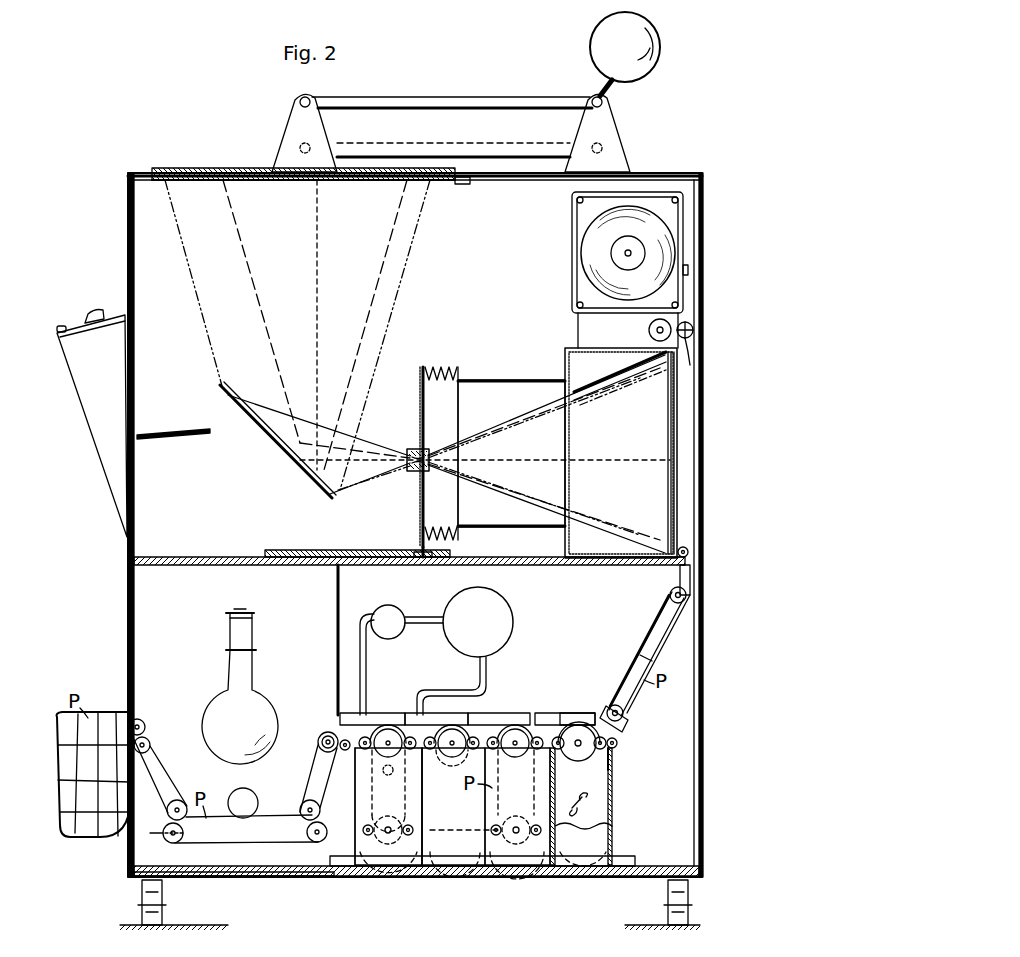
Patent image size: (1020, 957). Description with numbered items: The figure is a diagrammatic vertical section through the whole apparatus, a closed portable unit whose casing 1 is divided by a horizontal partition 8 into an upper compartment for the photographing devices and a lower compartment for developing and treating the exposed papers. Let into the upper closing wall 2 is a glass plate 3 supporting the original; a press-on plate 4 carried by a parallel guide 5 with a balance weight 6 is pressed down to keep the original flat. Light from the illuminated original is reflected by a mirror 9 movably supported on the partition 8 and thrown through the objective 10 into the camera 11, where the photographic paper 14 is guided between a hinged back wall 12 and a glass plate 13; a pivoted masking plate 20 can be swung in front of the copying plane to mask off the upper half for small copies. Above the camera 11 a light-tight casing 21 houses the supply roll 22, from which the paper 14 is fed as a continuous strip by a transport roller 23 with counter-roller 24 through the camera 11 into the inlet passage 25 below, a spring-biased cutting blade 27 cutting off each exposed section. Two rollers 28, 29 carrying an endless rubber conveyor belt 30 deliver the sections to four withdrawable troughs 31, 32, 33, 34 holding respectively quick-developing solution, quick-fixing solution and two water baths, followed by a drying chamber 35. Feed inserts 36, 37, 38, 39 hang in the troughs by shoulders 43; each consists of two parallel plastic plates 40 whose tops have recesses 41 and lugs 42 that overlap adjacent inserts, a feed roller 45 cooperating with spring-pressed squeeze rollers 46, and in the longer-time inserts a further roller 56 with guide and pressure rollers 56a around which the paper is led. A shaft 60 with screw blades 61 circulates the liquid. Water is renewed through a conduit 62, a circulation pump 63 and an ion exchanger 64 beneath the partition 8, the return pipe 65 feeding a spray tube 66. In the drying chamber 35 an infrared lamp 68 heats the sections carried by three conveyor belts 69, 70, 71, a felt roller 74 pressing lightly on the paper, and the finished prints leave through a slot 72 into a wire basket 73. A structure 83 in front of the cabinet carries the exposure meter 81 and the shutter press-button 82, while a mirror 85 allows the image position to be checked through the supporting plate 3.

The casing 1 is at (128, 215).
The upper horizontal closing wall 2 is at (645, 175).
The glass plate 3 is at (192, 170).
The press-on plate 4 is at (224, 172).
The parallel guide 5 is at (426, 152).
The balance weight 6 is at (590, 54).
The horizontal partition 8 is at (203, 560).
The mirror 9 is at (254, 425).
The objective 10 is at (416, 447).
The camera 11 is at (563, 360).
The hinged back wall 12 is at (668, 432).
The glass plate 13 is at (671, 472).
The photographic paper 14 is at (674, 496).
The masking plate 20 is at (650, 402).
The light-tight closable casing 21 is at (572, 232).
The supply roll 22 is at (590, 268).
The transport roller 23 is at (649, 331).
The counter-roller 24 is at (655, 366).
The inlet passage 25 is at (646, 638).
The cutting blade 27 is at (668, 552).
The roller 28 is at (668, 594).
The roller 29 is at (625, 716).
The endless conveyor belt 30 is at (640, 692).
The trough 31 is at (577, 865).
The trough 32 is at (550, 868).
The trough 33 is at (468, 868).
The trough 34 is at (414, 796).
The drying chamber 35 is at (252, 868).
The feed insert 36 is at (612, 825).
The feed insert 37 is at (506, 868).
The feed insert 38 is at (424, 868).
The feed insert 39 is at (372, 870).
The plastic plates 40 is at (574, 722).
The recesses 41 is at (525, 722).
The lugs 42 is at (336, 722).
The shoulders 43 is at (610, 752).
The feed roller 45 is at (474, 720).
The squeeze rollers 46 is at (432, 750).
The further roller 56 is at (514, 820).
The guide and pressure rollers 56a is at (465, 831).
The shaft 60 is at (608, 805).
The screw blades 61 is at (581, 797).
The conduit 62 is at (366, 660).
The circulation pump 63 is at (383, 607).
The ion exchanger 64 is at (454, 603).
The return pipe 65 is at (480, 675).
The spray tube 66 is at (388, 788).
The infrared lamp 68 is at (222, 692).
The conveyor belt 69 is at (315, 760).
The conveyor belt 70 is at (220, 838).
The conveyor belt 71 is at (148, 748).
The slot 72 is at (130, 720).
The wire basket 73 is at (80, 835).
The felt roller 74 is at (253, 786).
The exposure meter 81 is at (100, 313).
The press-button 82 is at (66, 324).
The structure 83 is at (108, 470).
The mirror 85 is at (160, 434).